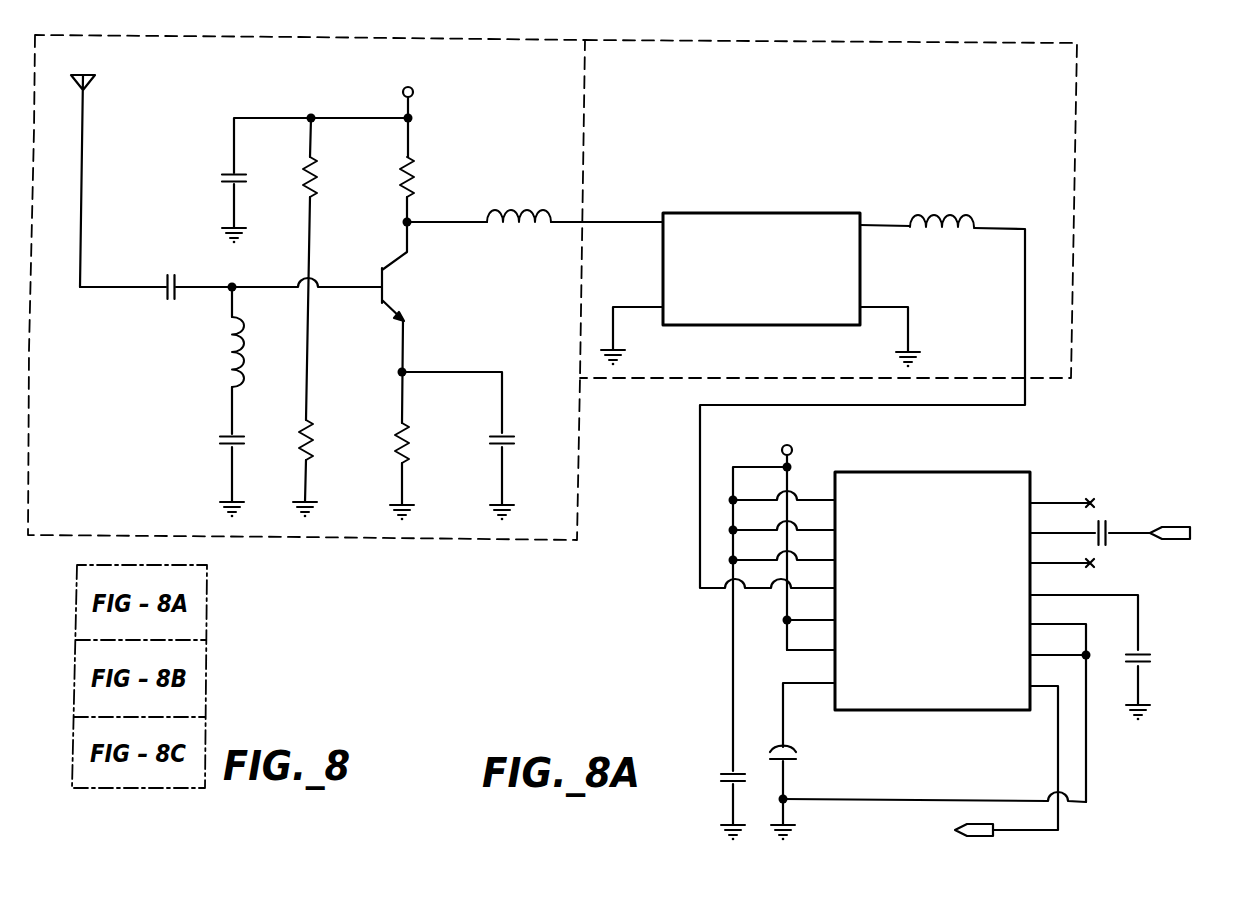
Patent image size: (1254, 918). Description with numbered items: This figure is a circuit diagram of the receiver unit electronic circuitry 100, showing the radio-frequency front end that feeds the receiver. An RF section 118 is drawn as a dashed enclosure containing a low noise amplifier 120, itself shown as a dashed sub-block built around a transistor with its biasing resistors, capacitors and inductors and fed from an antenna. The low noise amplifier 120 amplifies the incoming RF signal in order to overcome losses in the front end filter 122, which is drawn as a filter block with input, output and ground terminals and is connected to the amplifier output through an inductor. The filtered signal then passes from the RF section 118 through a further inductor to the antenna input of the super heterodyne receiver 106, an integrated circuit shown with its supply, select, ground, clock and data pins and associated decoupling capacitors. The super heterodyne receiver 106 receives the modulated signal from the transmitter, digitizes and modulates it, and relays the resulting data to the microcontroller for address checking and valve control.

The receiver unit electronic circuitry 100 is at (1137, 169).
The low noise amplifier 120 is at (515, 57).
The RF section 118 is at (1077, 106).
The front end filter 122 is at (837, 200).
The super heterodyne receiver 106 is at (907, 482).